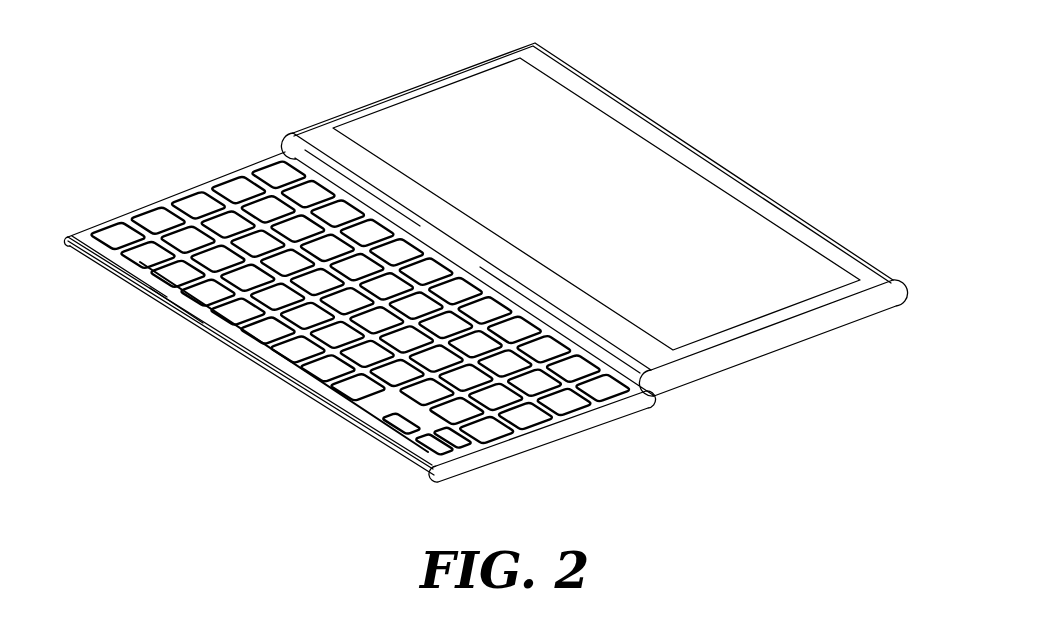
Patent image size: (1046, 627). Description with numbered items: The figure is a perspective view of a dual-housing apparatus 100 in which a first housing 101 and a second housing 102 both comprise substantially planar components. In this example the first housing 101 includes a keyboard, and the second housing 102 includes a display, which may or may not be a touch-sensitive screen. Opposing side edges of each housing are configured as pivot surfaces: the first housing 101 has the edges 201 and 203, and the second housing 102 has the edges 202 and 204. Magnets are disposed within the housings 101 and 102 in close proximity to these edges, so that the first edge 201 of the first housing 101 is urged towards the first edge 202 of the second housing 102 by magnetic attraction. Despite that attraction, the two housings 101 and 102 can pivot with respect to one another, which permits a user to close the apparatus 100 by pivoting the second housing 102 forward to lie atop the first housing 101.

The dual-housing apparatus 100 is at (492, 275).
The first housing 101 is at (376, 328).
The second housing 102 is at (600, 233).
The first edge of the first housing 201 is at (646, 400).
The first edge of the second housing 202 is at (670, 394).
The edge of the first housing 203 is at (395, 453).
The edge of the second housing 204 is at (855, 250).